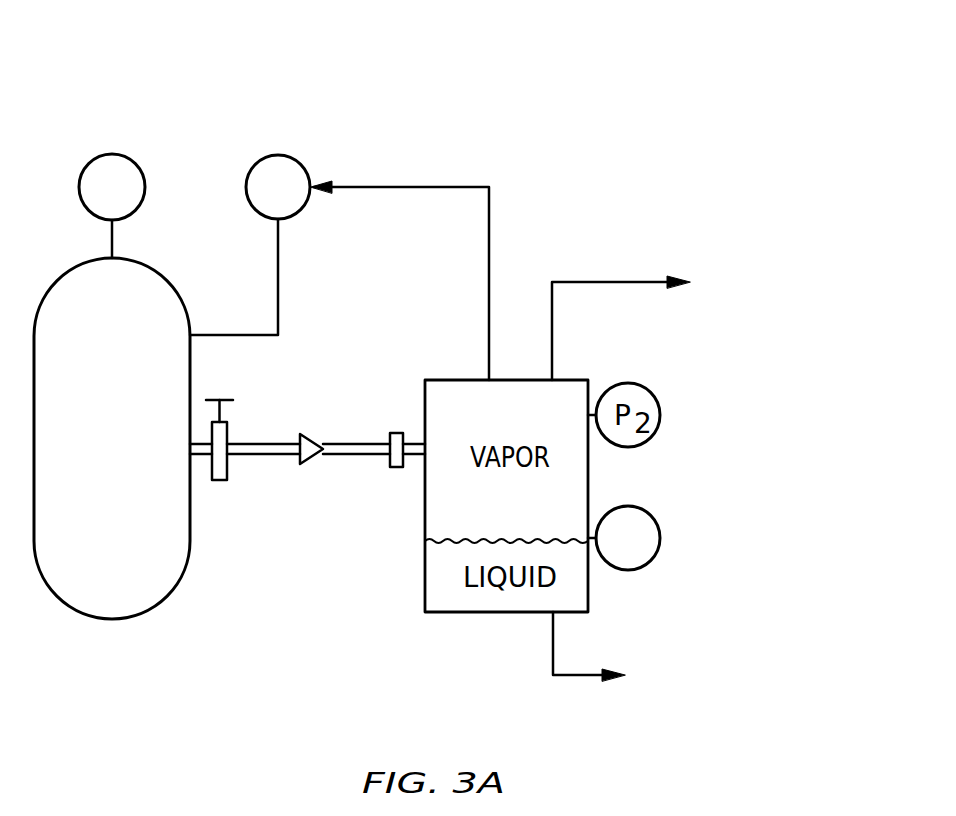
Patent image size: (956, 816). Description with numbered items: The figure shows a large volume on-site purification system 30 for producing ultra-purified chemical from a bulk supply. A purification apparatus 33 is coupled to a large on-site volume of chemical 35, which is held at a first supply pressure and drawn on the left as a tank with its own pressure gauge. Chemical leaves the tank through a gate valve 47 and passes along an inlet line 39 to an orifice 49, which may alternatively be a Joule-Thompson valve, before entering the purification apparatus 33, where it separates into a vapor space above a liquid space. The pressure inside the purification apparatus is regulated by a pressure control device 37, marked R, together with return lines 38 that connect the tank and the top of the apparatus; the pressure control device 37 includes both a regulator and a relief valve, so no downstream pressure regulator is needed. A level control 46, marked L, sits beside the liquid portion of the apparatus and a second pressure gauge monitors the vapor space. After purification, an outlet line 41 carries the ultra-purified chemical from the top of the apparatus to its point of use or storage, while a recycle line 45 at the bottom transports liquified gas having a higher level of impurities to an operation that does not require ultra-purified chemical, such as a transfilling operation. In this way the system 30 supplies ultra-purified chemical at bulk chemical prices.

The large volume on-site purification system 30 is at (490, 72).
The purification apparatus 33 is at (425, 541).
The large on-site volume of chemical 35 is at (137, 607).
The pressure control device 37 is at (285, 157).
The return lines 38 is at (280, 292).
The inlet line 39 is at (303, 463).
The outlet line 41 is at (602, 282).
The recycle line 45 is at (583, 676).
The level control 46 is at (652, 507).
The gate valve 47 is at (220, 480).
The orifice 49 is at (396, 433).